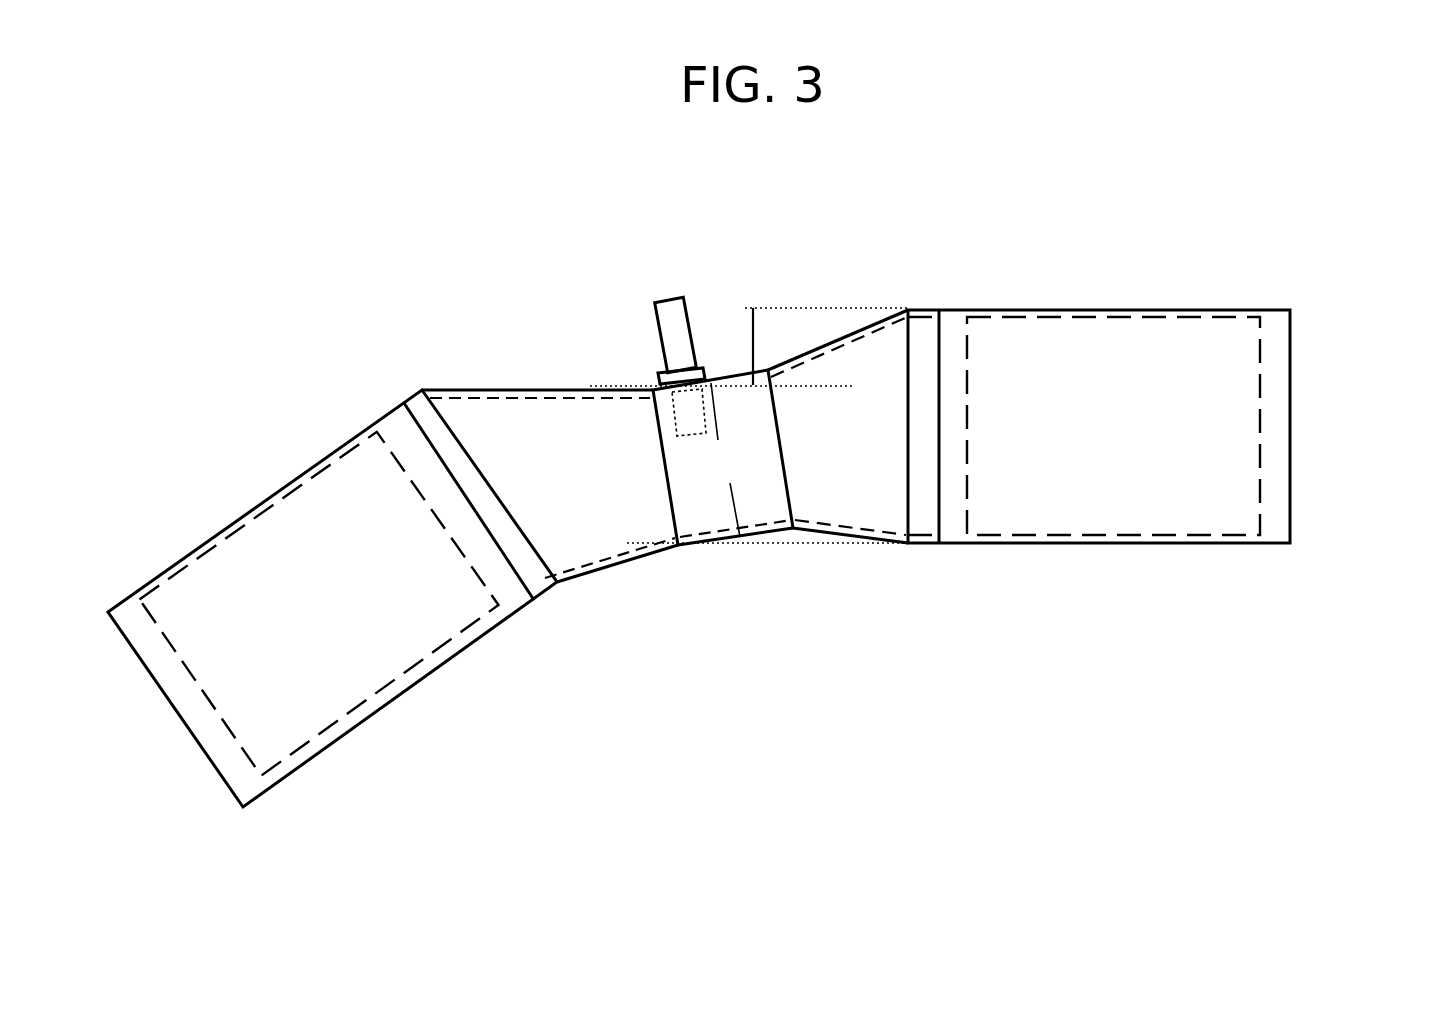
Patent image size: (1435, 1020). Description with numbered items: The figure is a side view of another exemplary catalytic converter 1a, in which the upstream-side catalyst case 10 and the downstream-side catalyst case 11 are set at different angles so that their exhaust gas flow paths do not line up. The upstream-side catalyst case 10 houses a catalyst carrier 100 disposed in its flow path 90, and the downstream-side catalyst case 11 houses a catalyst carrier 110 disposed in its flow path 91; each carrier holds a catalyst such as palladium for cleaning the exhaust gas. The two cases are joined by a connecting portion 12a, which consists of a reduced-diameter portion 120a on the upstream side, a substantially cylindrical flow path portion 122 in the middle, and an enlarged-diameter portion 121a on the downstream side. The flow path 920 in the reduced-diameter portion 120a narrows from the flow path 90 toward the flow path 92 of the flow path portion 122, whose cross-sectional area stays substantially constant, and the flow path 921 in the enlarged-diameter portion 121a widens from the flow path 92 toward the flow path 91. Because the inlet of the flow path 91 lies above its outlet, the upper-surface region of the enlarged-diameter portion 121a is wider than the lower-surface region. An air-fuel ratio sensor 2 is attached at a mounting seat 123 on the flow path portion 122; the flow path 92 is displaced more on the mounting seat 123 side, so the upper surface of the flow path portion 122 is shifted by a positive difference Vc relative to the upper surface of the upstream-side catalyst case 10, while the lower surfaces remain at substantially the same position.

The catalytic converter 1a is at (1305, 262).
The air-fuel ratio sensor 2 is at (686, 306).
The upstream-side catalyst case 10 is at (1257, 309).
The downstream-side catalyst case 11 is at (323, 460).
The connecting portion 12a is at (846, 292).
The flow path 90 is at (1136, 425).
The flow path 91 is at (333, 619).
The flow path 92 is at (741, 483).
The catalyst carrier 100 is at (1173, 315).
The catalyst carrier 110 is at (267, 503).
The reduced-diameter portion 120a is at (858, 540).
The enlarged-diameter portion 121a is at (610, 568).
The flow path portion 122 is at (747, 542).
The mounting seat 123 is at (730, 350).
The flow path 920 is at (869, 469).
The flow path 921 is at (611, 485).
The difference Vc is at (749, 406).